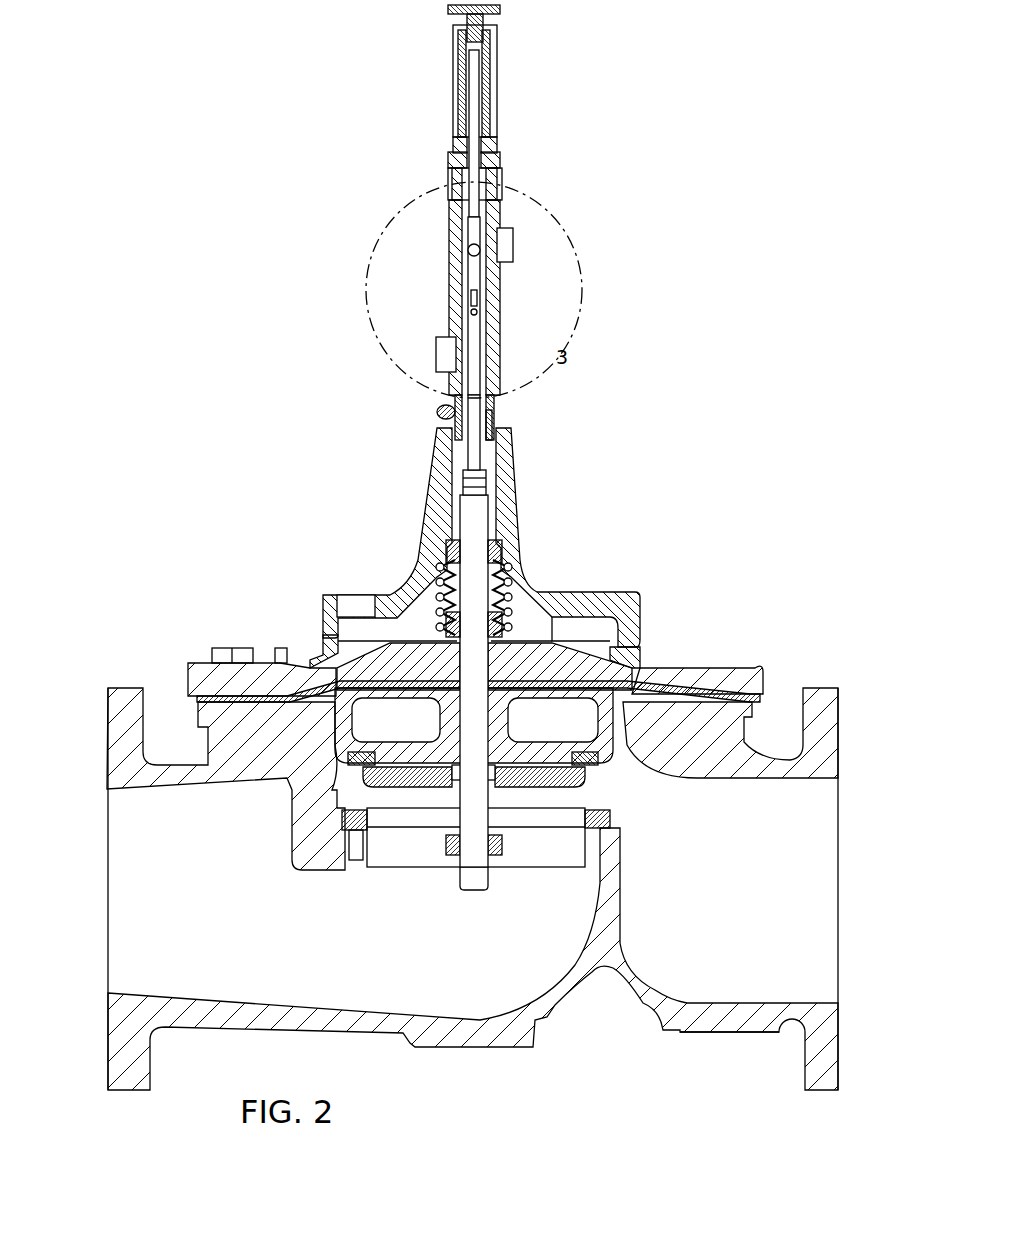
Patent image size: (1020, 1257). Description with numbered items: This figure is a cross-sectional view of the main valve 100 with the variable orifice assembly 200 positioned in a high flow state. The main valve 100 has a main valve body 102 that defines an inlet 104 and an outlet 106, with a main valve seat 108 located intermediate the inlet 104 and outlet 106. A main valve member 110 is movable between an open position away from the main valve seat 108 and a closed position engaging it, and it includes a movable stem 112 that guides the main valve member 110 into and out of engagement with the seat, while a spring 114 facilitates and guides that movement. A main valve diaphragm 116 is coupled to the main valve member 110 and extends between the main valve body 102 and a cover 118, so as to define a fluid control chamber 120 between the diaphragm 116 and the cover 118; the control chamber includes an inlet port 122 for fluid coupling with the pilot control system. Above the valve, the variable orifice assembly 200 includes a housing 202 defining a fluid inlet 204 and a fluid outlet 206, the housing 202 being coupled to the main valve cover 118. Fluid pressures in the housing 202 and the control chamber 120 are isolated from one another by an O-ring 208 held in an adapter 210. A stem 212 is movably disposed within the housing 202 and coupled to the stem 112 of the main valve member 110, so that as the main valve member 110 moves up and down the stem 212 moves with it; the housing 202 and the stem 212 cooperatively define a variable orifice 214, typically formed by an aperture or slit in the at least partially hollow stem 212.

The main valve 100 is at (140, 645).
The main valve body 102 is at (729, 1058).
The inlet 104 is at (70, 889).
The outlet 106 is at (878, 889).
The main valve seat 108 is at (476, 868).
The main valve member 110 is at (503, 715).
The movable stem 112 is at (476, 710).
The spring 114 is at (514, 586).
The main valve diaphragm 116 is at (478, 662).
The cover 118 is at (589, 548).
The fluid control chamber 120 is at (618, 601).
The inlet port 122 is at (372, 548).
The variable orifice assembly 200 is at (370, 155).
The housing 202 is at (395, 297).
The fluid inlet 204 is at (393, 368).
The fluid outlet 206 is at (559, 222).
The O-ring 208 is at (515, 425).
The adapter 210 is at (541, 430).
The stem 212 is at (419, 440).
The variable orifice 214 is at (409, 292).